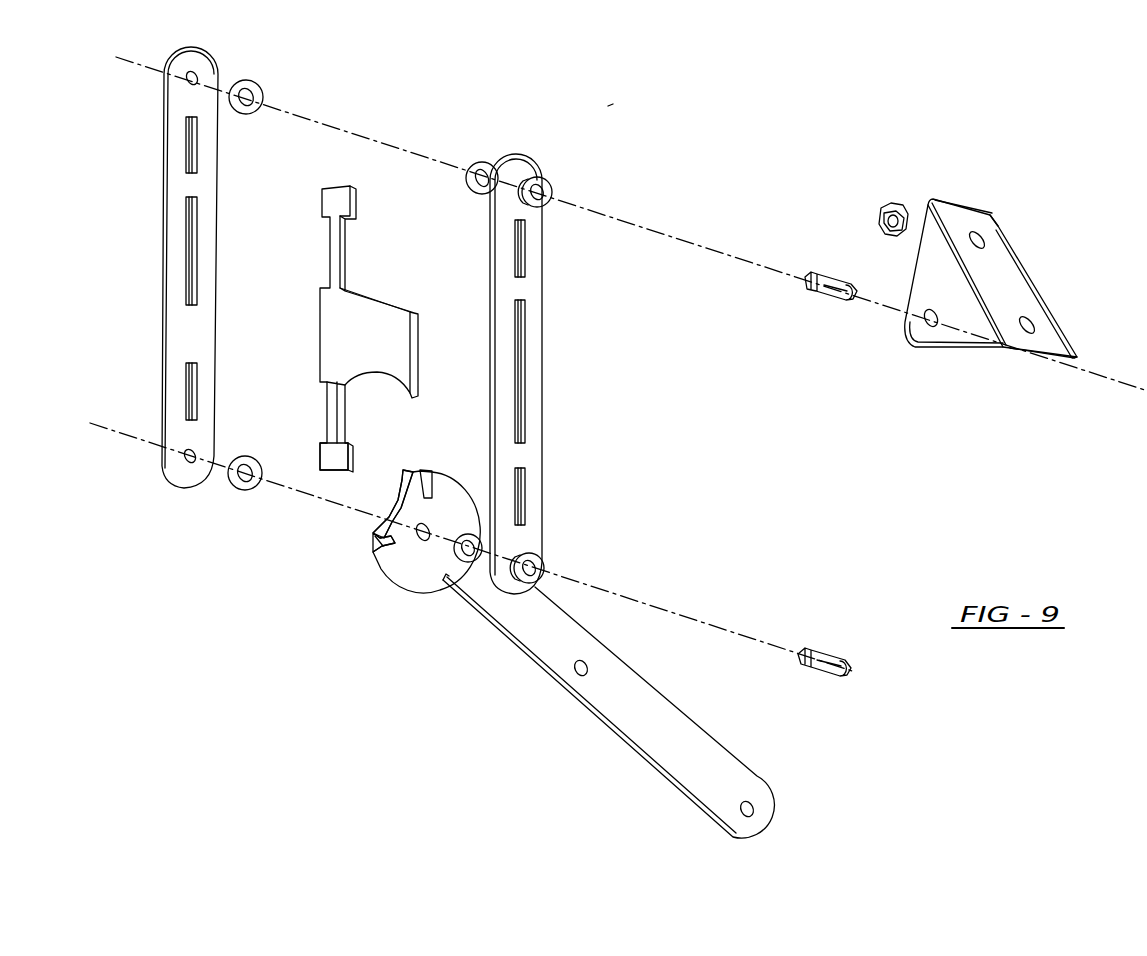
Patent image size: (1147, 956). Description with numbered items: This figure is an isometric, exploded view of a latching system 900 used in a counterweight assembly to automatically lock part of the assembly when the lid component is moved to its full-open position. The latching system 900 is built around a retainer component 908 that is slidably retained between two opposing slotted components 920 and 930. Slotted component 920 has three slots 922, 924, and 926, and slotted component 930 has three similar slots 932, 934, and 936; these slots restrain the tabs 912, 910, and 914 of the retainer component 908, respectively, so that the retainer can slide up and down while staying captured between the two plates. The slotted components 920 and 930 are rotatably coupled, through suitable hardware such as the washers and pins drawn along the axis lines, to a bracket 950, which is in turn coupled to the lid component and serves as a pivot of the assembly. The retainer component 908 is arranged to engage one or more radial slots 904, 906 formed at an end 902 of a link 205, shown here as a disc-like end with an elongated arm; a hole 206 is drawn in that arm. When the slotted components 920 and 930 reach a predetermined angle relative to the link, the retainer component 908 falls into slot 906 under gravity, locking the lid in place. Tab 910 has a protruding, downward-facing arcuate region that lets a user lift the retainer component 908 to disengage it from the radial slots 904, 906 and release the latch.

The latching system 900 is at (608, 106).
The end of link 902 is at (400, 606).
The radial slot 904 is at (413, 488).
The radial slot 906 is at (420, 488).
The retainer component 908 is at (360, 183).
The tab 910 is at (373, 328).
The tab 912 is at (326, 199).
The tab 914 is at (320, 448).
The slotted component 920 is at (164, 100).
The slot 922 is at (187, 146).
The slot 924 is at (186, 270).
The slot 926 is at (187, 389).
The slotted component 930 is at (543, 228).
The slot 932 is at (524, 258).
The slot 934 is at (525, 371).
The slot 936 is at (525, 493).
The bracket 950 is at (960, 225).
The link 205 is at (660, 743).
The lever hole 206 is at (575, 668).